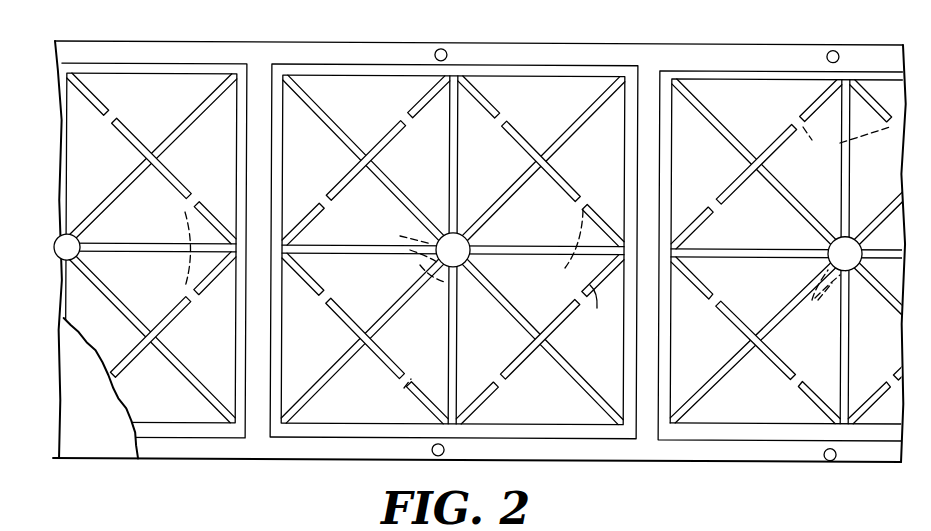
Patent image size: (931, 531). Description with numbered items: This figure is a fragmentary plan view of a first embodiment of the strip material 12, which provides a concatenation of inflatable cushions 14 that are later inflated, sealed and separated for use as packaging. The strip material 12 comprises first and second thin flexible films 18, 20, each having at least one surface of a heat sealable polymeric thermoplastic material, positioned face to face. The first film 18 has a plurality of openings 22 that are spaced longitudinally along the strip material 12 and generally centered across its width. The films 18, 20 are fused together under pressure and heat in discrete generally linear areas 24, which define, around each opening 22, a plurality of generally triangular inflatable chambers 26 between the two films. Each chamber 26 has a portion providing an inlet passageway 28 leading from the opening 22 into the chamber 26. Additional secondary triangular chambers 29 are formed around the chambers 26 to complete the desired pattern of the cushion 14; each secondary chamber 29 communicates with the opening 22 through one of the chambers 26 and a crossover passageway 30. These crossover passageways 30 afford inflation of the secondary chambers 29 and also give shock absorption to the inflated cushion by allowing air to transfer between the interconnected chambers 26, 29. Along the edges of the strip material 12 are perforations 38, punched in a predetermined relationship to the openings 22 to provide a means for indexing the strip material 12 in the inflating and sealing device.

The strip material 12 is at (302, 44).
The inflatable cushion 14 is at (762, 98).
The first film 18 is at (182, 447).
The second film 20 is at (97, 440).
The opening 22 is at (60, 253).
The discrete generally linear area 24 is at (172, 67).
The inflatable chamber 26 is at (149, 228).
The inlet passageway 28 is at (605, 272).
The secondary triangular chamber 29 is at (682, 110).
The crossover passageway 30 is at (524, 270).
The perforation 38 is at (442, 49).